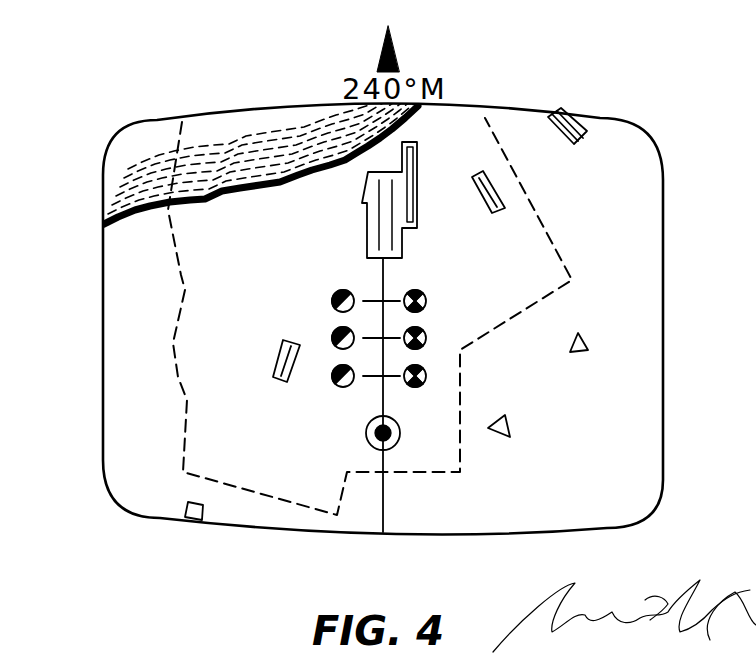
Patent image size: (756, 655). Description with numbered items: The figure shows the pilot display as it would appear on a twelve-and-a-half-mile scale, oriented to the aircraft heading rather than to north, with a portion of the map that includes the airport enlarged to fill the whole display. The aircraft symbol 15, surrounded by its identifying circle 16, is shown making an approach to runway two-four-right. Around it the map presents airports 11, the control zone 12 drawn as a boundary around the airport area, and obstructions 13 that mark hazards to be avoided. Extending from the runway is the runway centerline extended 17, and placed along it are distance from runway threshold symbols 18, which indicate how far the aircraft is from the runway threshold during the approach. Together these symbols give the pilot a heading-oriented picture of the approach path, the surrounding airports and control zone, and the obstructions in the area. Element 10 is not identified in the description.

The left row of light symbols 10 is at (334, 367).
The airports 11 is at (272, 380).
The control zone 12 is at (572, 280).
The obstructions 13 is at (588, 350).
The aircraft symbol 15 is at (395, 445).
The identifying circle 16 is at (369, 445).
The runway centerline extended 17 is at (383, 497).
The distance from runway threshold symbols 18 is at (423, 368).